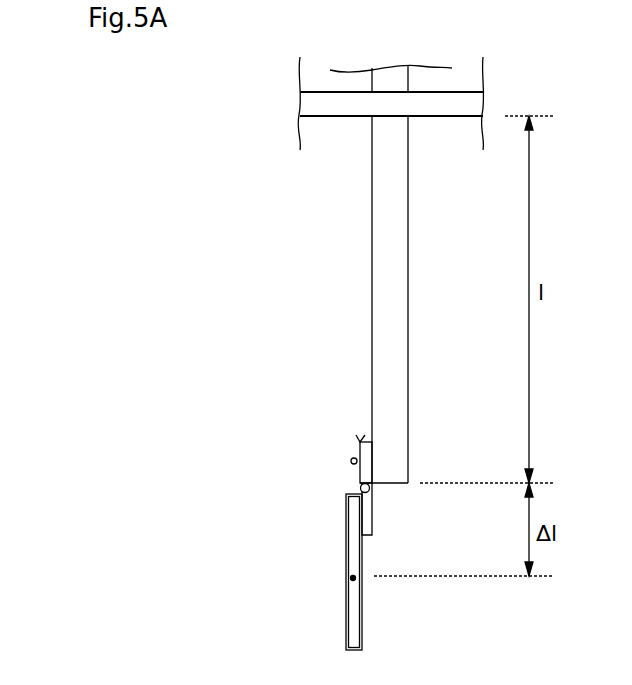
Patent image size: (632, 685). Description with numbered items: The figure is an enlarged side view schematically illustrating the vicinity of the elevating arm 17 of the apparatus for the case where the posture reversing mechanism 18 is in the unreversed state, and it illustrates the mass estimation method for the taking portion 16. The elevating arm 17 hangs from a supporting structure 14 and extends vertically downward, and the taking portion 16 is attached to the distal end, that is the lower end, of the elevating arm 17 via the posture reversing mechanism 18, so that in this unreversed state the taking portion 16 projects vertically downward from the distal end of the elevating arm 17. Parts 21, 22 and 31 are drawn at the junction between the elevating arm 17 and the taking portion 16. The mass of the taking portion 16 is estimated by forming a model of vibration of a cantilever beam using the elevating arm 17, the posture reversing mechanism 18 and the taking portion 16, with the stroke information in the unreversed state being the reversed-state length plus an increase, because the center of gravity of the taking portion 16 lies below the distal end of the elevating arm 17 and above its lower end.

The support frame 14 is at (483, 92).
The taking portion 16 is at (345, 632).
The elevating arm 17 is at (408, 316).
The posture reversing mechanism 18 is at (360, 440).
The connecting block 21 is at (355, 450).
The link 22 is at (372, 512).
The pin 31 is at (350, 461).